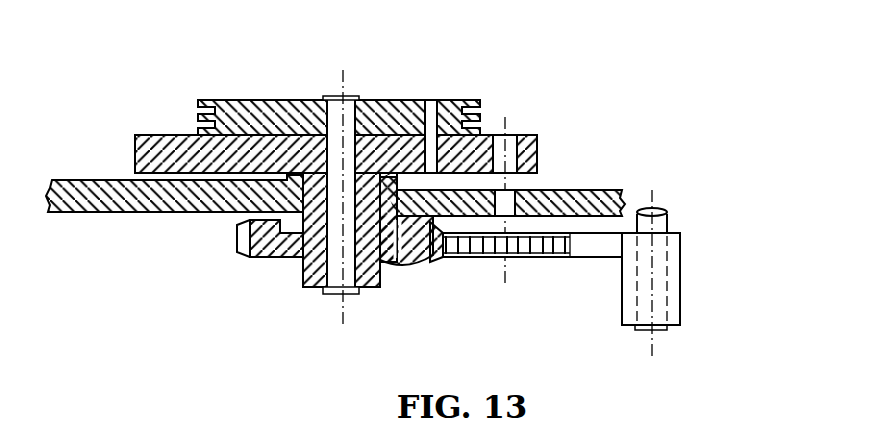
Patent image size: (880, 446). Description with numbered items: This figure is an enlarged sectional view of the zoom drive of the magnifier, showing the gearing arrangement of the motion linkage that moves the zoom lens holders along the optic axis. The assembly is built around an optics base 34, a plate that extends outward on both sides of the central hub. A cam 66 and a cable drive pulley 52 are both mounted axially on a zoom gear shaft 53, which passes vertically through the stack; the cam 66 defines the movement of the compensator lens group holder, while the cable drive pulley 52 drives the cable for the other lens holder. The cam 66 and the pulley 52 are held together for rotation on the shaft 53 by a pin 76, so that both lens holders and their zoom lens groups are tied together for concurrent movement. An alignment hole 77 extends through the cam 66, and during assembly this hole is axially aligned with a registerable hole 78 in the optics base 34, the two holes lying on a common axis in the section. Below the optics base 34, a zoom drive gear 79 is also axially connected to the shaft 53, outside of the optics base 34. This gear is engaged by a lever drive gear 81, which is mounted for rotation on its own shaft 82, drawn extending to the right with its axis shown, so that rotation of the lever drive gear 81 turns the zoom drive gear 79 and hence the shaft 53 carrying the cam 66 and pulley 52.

The optics base 34 is at (143, 210).
The cable drive pulley 52 is at (277, 100).
The zoom gear shaft 53 is at (345, 96).
The cam 66 is at (165, 137).
The pin 76 is at (433, 105).
The alignment hole 77 is at (510, 133).
The registerable hole 78 is at (513, 185).
The zoom drive gear 79 is at (418, 263).
The lever drive gear 81 is at (607, 248).
The shaft 82 is at (668, 222).